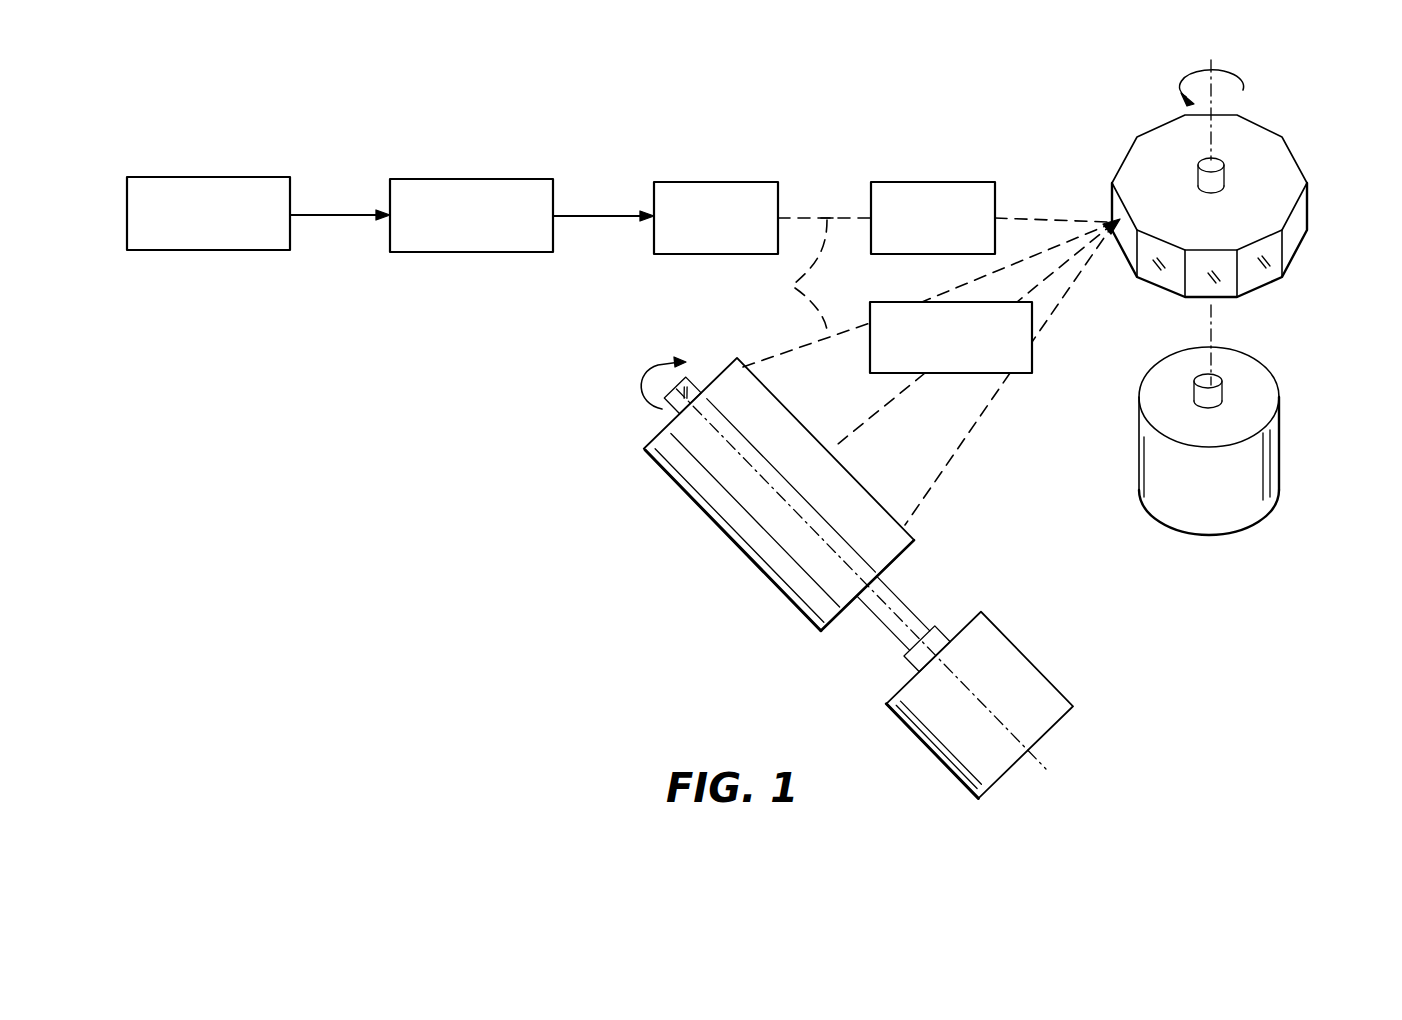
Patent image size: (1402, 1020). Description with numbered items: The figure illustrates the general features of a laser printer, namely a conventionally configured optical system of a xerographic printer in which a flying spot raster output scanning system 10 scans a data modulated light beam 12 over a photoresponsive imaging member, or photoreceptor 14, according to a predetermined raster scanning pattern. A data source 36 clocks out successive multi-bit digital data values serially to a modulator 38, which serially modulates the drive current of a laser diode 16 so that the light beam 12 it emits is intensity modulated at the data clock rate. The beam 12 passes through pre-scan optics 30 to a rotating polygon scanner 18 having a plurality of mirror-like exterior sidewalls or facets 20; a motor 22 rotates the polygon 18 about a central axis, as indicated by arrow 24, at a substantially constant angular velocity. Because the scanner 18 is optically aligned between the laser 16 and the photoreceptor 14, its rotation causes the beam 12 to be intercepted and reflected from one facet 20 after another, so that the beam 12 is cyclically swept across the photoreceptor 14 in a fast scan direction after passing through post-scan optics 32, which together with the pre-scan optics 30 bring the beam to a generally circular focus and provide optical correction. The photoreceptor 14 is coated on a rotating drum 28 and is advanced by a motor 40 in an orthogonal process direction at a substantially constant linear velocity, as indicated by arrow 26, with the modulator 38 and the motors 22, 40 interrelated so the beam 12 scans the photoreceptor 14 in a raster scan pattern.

The flying spot raster output scanning (ROS) system 10 is at (396, 516).
The data modulated light beam 12 is at (795, 293).
The photoresponsive imaging member (photoreceptor) 14 is at (724, 524).
The laser diode 16 is at (718, 182).
The rotating polygon scanner 18 is at (1273, 157).
The facets 20 is at (1270, 250).
The motor 22 is at (1245, 375).
The arrow 24 is at (1228, 70).
The arrow 26 is at (660, 408).
The rotating drum 28 is at (898, 558).
The pre-scan optics 30 is at (933, 182).
The post-scan optics 32 is at (978, 375).
The data source 36 is at (208, 177).
The modulator 38 is at (474, 179).
The motor 40 is at (1022, 656).